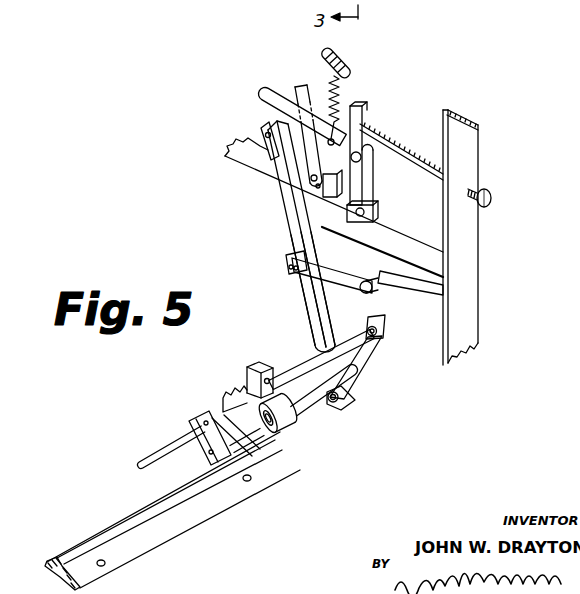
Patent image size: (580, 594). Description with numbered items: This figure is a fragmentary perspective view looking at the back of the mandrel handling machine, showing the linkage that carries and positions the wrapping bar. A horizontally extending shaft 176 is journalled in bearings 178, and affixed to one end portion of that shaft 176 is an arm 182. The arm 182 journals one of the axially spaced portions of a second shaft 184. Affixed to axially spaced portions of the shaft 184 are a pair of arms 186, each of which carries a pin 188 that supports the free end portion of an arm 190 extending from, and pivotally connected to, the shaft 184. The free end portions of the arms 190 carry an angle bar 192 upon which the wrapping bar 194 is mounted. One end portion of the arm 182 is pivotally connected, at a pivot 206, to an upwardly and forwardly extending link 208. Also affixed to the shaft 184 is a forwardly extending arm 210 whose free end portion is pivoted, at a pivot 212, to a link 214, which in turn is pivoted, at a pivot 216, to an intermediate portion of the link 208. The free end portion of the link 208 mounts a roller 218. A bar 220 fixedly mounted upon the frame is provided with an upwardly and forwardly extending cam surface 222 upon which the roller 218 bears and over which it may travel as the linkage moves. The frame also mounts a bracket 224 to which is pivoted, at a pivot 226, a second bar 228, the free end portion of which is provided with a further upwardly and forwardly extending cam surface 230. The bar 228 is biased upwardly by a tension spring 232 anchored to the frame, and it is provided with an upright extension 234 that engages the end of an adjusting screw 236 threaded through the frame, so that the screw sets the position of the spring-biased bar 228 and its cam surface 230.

The shaft 176 is at (310, 396).
The bearings 178 is at (290, 420).
The arm 182 is at (375, 358).
The shaft 184 is at (172, 448).
The arms 186 is at (200, 445).
The pin 188 is at (243, 486).
The arm 190 is at (222, 407).
The angle bar 192 is at (112, 530).
The wrapping bar 194 is at (166, 527).
The pivot 206 is at (354, 400).
The link 208 is at (320, 337).
The arm 210 is at (400, 288).
The pivot 212 is at (362, 290).
The link 214 is at (325, 273).
The pivot 216 is at (287, 260).
The roller 218 is at (290, 117).
The bar 220 is at (308, 157).
The cam surface 222 is at (300, 146).
The bracket 224 is at (363, 190).
The pivot 226 is at (375, 133).
The bar 228 is at (315, 113).
The cam surface 230 is at (282, 107).
The tension spring 232 is at (335, 93).
The upright extension 234 is at (362, 112).
The adjusting screw 236 is at (495, 197).